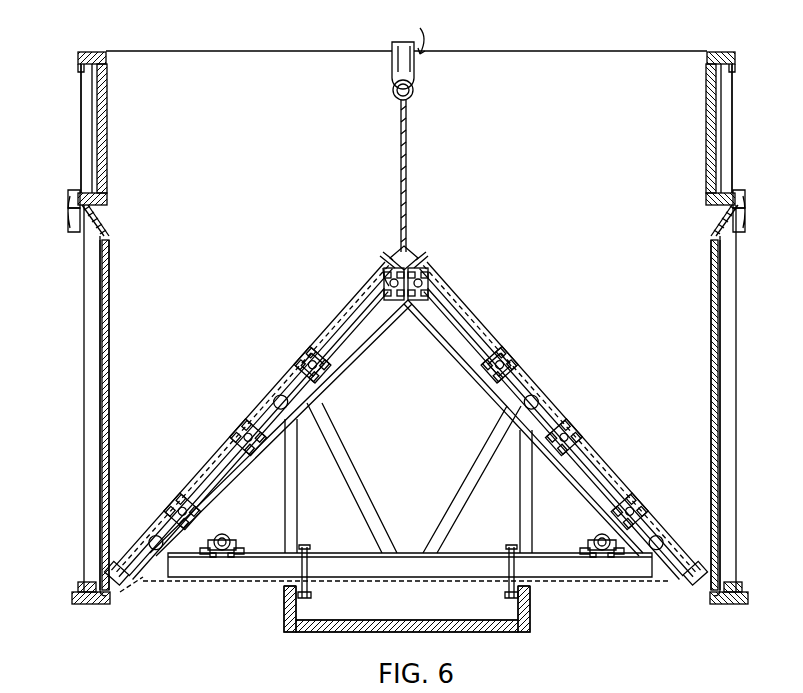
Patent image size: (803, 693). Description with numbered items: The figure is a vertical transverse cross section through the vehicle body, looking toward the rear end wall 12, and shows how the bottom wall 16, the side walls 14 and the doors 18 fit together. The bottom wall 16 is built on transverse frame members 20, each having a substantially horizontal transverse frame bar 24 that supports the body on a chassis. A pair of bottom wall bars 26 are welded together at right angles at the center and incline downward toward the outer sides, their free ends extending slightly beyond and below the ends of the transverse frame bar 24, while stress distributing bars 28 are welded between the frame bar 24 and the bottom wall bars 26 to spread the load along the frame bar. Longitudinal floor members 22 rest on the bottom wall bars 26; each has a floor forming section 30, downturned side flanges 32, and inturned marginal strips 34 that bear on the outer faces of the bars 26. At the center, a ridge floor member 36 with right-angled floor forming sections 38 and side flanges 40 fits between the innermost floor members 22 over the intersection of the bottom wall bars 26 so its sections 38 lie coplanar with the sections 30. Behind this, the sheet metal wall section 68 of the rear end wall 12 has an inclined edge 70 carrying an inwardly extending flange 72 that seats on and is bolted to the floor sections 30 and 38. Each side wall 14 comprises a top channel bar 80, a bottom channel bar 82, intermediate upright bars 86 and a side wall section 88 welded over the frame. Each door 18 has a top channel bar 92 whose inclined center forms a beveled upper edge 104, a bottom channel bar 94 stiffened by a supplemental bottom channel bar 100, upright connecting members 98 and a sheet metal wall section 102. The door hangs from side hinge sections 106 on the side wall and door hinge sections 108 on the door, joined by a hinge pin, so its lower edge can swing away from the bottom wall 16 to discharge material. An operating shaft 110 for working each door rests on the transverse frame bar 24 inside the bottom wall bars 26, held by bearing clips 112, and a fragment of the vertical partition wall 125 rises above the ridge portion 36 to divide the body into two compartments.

The rear end wall 12 is at (576, 44).
The side wall 14 is at (112, 119).
The bottom wall 16 is at (294, 360).
The door 18 is at (112, 421).
The transverse frame member 20 is at (575, 596).
The floor member 22 is at (209, 461).
The transverse frame bar 24 is at (270, 574).
The bottom wall bar 26 is at (318, 395).
The stress distributing bar 28 is at (348, 490).
The floor forming section 30 is at (278, 399).
The side flange 32 is at (340, 360).
The marginal strip 34 is at (339, 364).
The central ridge floor member 36 is at (411, 251).
The floor forming section 38 is at (427, 263).
The side flange 40 is at (395, 259).
The sheet metal wall section 68 is at (381, 52).
The inclined edge 70 is at (585, 416).
The inwardly extending flange 72 is at (317, 346).
The top channel bar 80 is at (89, 51).
The bottom channel bar 82 is at (87, 195).
The intermediate upright bar 86 is at (90, 96).
The side wall section 88 is at (107, 91).
The top channel bar 92 is at (96, 238).
The bottom channel bar 94 is at (92, 584).
The upright connecting member 98 is at (85, 338).
The supplemental bottom channel bar 100 is at (72, 598).
The sheet metal wall section 102 is at (108, 292).
The beveled upper edge 104 is at (109, 223).
The side hinge section 106 is at (68, 196).
The door hinge section 108 is at (70, 221).
The operating shaft 110 is at (220, 560).
The bearing clip 112 is at (221, 540).
The partition wall 125 is at (407, 136).